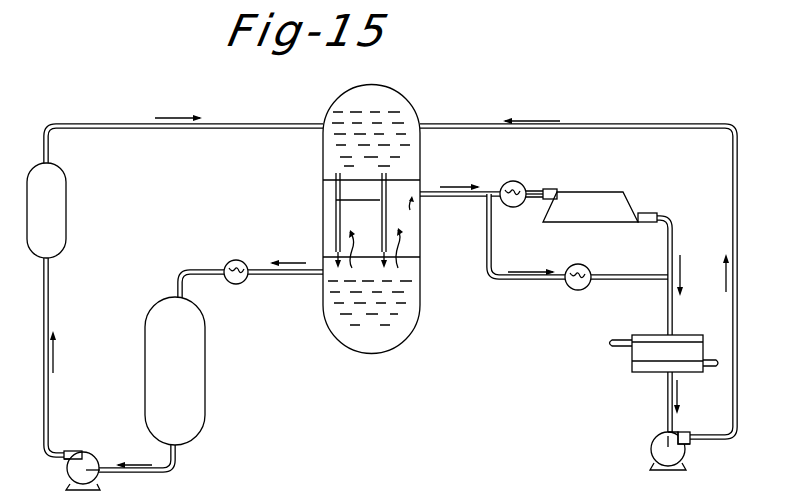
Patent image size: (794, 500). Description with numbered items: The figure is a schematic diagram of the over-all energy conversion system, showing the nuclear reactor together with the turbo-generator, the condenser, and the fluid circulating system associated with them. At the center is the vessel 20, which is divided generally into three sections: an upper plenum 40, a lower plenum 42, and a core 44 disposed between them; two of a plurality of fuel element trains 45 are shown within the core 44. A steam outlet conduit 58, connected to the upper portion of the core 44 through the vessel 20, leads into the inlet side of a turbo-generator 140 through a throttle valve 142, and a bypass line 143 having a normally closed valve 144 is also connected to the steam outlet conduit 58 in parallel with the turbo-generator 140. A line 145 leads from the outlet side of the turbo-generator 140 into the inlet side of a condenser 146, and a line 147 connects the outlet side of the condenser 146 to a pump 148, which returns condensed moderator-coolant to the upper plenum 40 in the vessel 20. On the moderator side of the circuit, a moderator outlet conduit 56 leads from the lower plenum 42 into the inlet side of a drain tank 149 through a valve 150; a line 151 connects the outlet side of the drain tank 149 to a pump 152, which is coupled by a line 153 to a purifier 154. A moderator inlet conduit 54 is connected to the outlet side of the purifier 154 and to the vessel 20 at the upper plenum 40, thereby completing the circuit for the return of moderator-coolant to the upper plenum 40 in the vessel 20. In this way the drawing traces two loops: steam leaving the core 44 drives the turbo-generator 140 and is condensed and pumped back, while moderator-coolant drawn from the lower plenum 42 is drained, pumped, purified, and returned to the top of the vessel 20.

The vessel 20 is at (376, 218).
The upper plenum 40 is at (385, 107).
The lower plenum 42 is at (382, 345).
The core 44 is at (372, 207).
The fuel element trains 45 is at (384, 212).
The moderator inlet conduit 54 is at (255, 127).
The moderator outlet conduit 56 is at (276, 276).
The steam outlet conduit 58 is at (442, 198).
The turbo-generator 140 is at (576, 210).
The throttle valve 142 is at (530, 168).
The bypass line 143 is at (491, 246).
The normally closed valve 144 is at (582, 264).
The line 145 is at (667, 306).
The condenser 146 is at (632, 358).
The line 147 is at (667, 402).
The pump 148 is at (652, 452).
The drain tank 149 is at (198, 360).
The valve 150 is at (236, 284).
The line 151 is at (150, 475).
The pump 152 is at (68, 476).
The line 153 is at (48, 402).
The purifier 154 is at (58, 214).